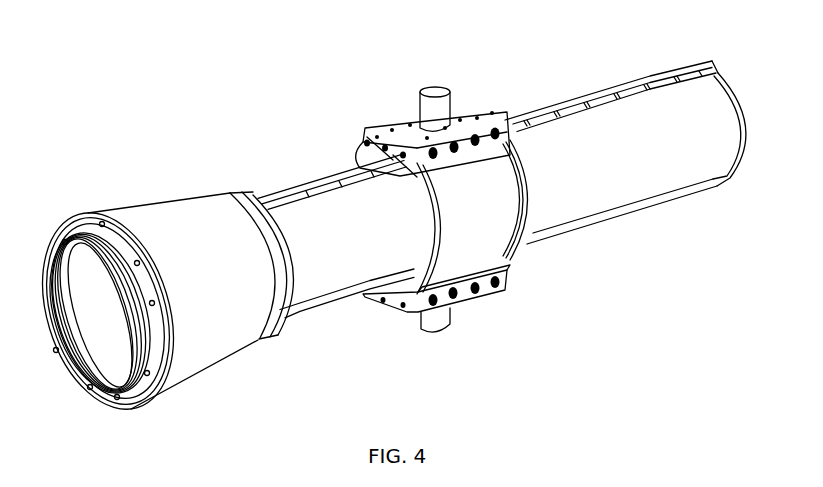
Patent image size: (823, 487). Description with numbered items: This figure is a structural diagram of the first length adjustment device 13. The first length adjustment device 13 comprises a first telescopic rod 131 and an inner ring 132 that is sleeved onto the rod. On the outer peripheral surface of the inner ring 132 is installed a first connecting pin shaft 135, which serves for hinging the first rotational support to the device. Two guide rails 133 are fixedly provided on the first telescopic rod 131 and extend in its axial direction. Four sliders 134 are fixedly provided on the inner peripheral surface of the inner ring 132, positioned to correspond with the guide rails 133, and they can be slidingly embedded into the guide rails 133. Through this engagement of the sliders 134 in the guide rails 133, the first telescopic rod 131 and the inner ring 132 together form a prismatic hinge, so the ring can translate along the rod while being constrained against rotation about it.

The first length adjustment device 13 is at (383, 227).
The first telescopic rod 131 is at (610, 187).
The inner ring 132 is at (470, 207).
The guide rail 133 is at (287, 187).
The slider 134 is at (367, 143).
The first connecting pin shaft 135 is at (433, 108).